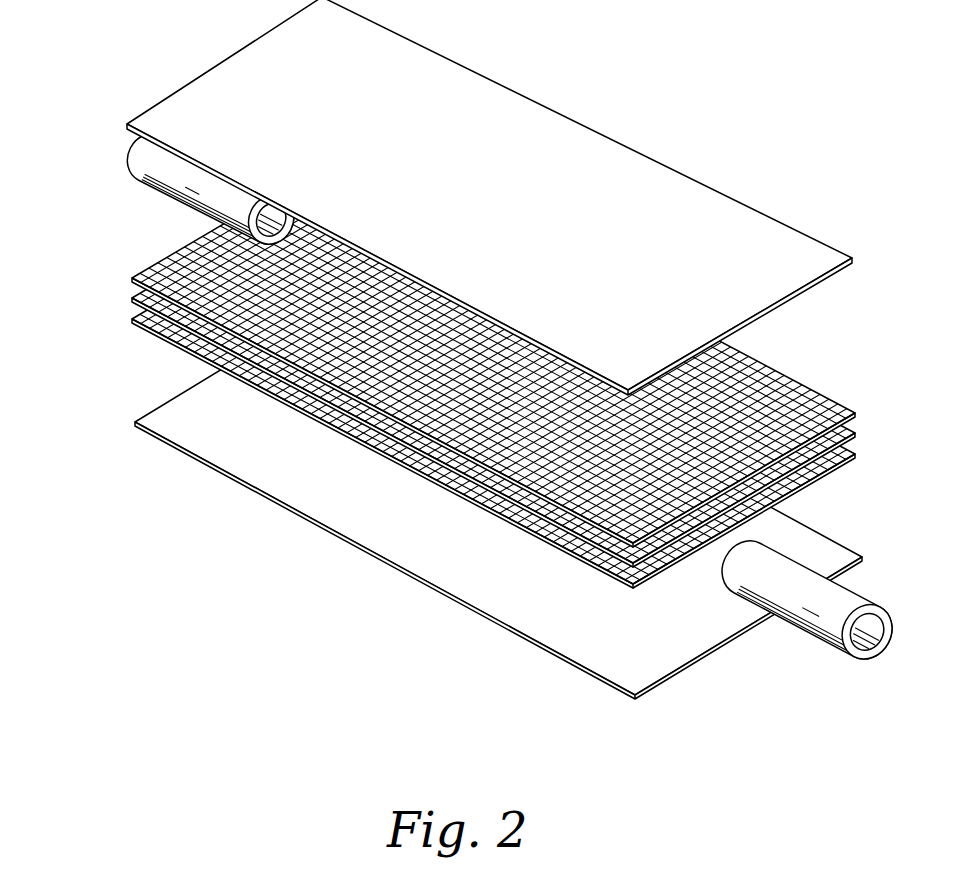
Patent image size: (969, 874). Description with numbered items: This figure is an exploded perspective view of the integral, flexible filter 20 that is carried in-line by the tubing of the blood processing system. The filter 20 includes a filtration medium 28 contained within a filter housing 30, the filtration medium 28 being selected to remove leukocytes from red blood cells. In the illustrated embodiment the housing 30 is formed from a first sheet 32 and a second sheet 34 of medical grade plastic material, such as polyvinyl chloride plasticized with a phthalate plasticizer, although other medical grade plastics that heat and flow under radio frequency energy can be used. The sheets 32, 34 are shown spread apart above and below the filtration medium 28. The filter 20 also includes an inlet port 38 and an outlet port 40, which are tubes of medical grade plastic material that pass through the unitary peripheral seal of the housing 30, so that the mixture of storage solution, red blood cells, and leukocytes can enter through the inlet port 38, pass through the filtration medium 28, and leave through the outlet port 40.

The integral flexible filter 20 is at (466, 437).
The filtration medium 28 is at (767, 393).
The filter housing 30 is at (198, 397).
The first sheet 32 is at (457, 83).
The second sheet 34 is at (393, 545).
The inlet port 38 is at (802, 607).
The outlet port 40 is at (148, 162).